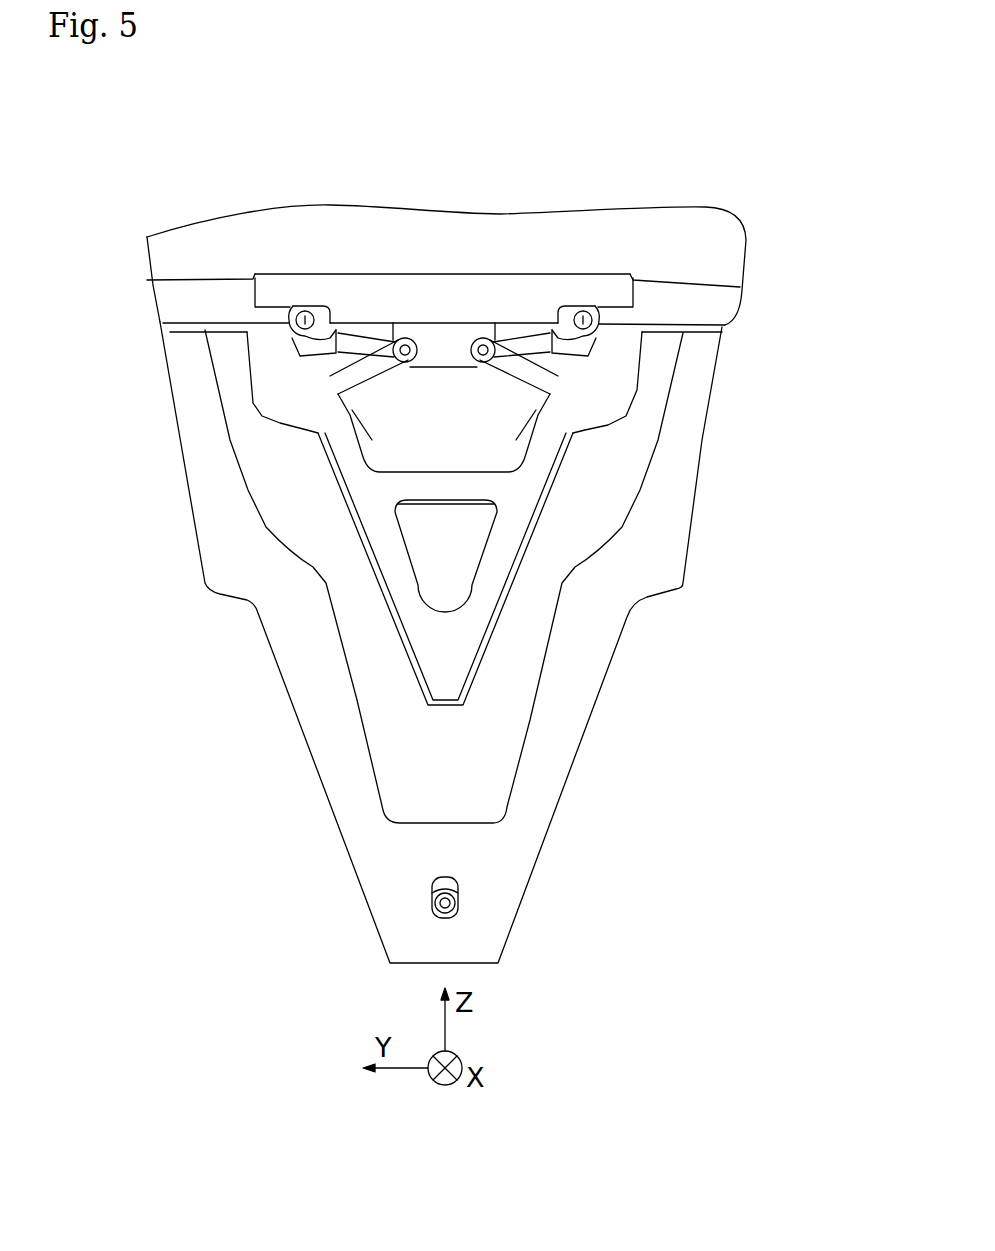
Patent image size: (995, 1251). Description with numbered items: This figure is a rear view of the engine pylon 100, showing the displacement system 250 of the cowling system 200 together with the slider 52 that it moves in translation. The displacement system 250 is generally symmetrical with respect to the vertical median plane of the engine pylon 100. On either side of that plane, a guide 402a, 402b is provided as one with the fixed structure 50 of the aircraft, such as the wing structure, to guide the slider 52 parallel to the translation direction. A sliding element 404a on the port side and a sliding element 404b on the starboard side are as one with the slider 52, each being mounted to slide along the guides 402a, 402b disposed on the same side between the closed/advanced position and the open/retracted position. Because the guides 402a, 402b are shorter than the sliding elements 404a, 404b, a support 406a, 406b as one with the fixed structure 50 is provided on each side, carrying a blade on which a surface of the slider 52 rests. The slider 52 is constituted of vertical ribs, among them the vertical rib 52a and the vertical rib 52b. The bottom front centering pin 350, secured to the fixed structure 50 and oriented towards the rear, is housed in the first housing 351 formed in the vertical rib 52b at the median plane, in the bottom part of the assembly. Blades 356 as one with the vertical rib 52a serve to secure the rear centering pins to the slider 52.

The engine pylon 100 is at (702, 912).
The cowling system 200 is at (740, 652).
The displacement system 250 is at (748, 481).
The fixed structure 50 is at (447, 343).
The slider 52 is at (642, 800).
The vertical rib 52a is at (453, 640).
The vertical rib 52b is at (348, 787).
The bottom front centering pin 350 is at (432, 902).
The first housing 351 is at (450, 918).
The blades 356 is at (625, 418).
The guide 402a is at (293, 345).
The guide 402b is at (598, 337).
The sliding element 404a is at (303, 305).
The sliding element 404b is at (587, 305).
The support 406a is at (378, 340).
The support 406b is at (500, 345).